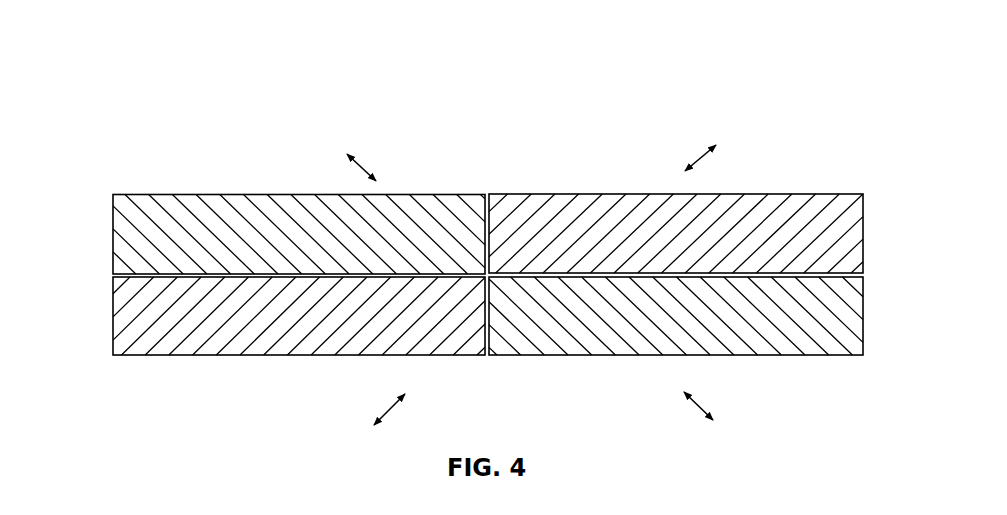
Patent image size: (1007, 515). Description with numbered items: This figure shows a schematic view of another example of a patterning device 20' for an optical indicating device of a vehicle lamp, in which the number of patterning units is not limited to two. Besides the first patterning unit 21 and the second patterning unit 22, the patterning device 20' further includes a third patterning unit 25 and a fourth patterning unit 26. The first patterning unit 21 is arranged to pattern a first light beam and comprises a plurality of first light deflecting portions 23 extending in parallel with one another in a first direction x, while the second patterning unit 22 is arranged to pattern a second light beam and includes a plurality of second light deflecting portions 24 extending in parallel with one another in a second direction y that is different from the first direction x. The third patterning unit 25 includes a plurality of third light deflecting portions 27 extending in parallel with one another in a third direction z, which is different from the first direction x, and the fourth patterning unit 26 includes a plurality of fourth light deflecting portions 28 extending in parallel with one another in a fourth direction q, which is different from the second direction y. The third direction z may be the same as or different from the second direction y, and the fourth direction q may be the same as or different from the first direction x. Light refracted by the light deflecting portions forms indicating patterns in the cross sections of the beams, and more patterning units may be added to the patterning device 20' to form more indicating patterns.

The patterning device 20' is at (490, 258).
The first patterning unit 21 is at (112, 217).
The second patterning unit 22 is at (112, 333).
The first light deflecting portions 23 is at (215, 215).
The second light deflecting portions 24 is at (222, 337).
The third patterning unit 25 is at (865, 237).
The fourth patterning unit 26 is at (865, 327).
The third light deflecting portions 27 is at (754, 213).
The fourth light deflecting portions 28 is at (755, 340).